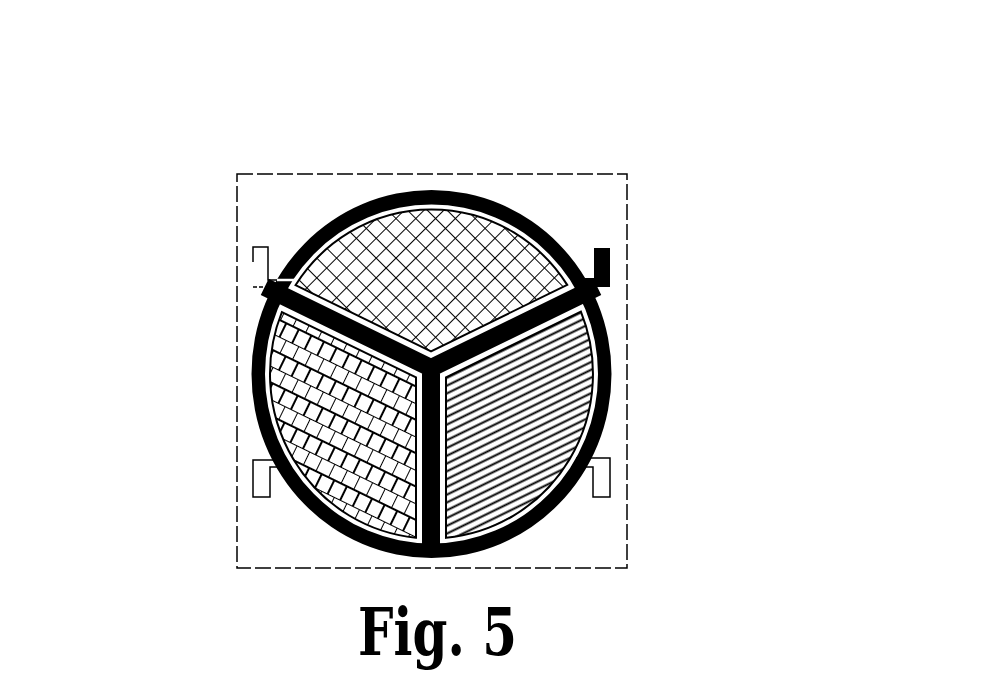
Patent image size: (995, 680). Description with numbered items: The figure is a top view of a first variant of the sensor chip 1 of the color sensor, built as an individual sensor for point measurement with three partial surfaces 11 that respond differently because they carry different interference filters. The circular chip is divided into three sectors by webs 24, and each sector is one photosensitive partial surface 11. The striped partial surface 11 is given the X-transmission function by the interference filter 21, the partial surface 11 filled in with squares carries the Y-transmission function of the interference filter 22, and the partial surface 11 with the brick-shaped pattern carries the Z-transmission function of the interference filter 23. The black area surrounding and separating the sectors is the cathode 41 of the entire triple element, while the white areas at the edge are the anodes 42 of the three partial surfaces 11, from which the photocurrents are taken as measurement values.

The sensor chip 1 is at (574, 184).
The partial surfaces 11 is at (466, 287).
The interference filter (X) 21 is at (552, 392).
The interference filter (Y) 22 is at (452, 242).
The interference filter (Z) 23 is at (300, 383).
The webs 24 is at (487, 337).
The cathode 41 is at (605, 357).
The anodes 42 is at (257, 255).